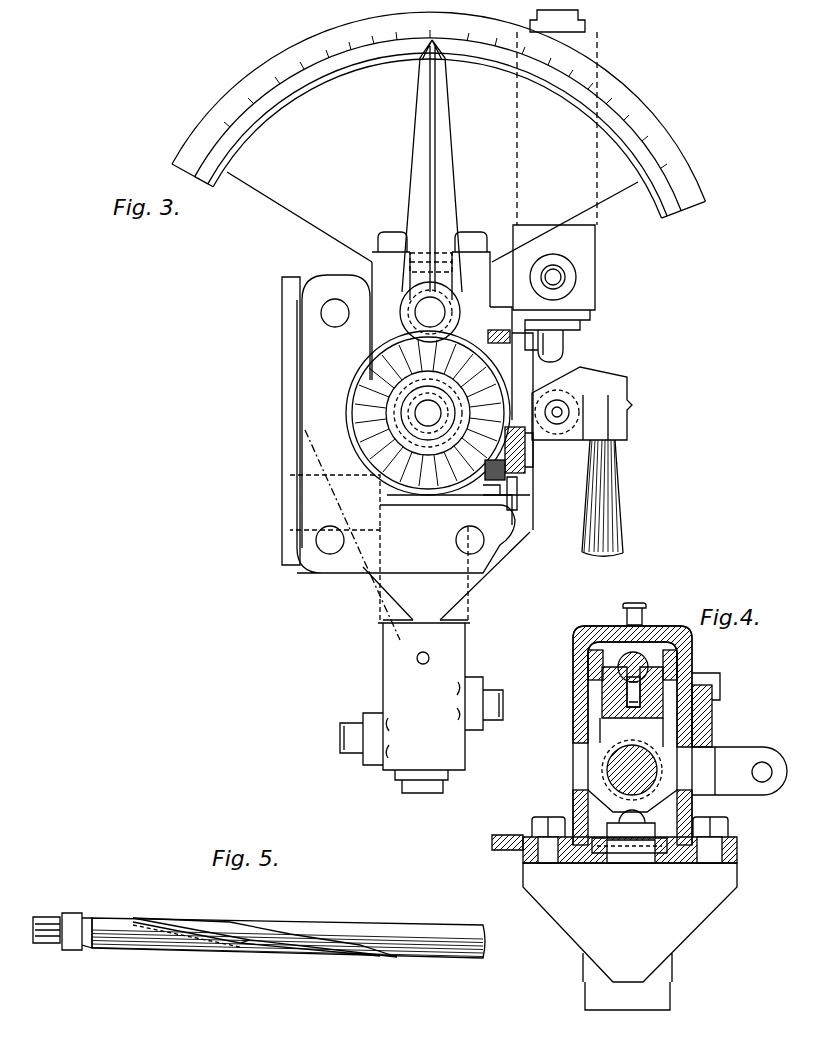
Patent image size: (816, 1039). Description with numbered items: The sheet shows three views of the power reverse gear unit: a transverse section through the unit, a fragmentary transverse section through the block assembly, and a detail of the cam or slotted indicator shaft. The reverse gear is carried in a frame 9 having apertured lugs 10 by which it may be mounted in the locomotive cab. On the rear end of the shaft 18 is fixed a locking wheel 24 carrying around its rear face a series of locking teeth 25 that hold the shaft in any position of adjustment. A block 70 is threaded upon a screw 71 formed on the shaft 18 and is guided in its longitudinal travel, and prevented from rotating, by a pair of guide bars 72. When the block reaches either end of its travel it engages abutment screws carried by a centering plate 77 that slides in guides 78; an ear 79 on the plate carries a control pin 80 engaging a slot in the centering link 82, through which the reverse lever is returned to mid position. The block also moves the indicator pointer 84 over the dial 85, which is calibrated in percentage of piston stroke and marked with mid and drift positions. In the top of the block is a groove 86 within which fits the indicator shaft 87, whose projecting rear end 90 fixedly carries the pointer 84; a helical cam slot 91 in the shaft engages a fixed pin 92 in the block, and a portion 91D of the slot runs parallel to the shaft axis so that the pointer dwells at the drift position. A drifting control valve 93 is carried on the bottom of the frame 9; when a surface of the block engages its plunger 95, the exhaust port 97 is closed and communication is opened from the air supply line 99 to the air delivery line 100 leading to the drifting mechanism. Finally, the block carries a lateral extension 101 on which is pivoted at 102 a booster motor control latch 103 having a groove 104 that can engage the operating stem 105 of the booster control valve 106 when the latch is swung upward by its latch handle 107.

In FIG. 3, the frame 9 is at (410, 436).
In FIG. 4, the frame 9 is at (577, 800).
In FIG. 3, the apertured lugs 10 is at (282, 317).
In FIG. 3, the shaft 18 is at (428, 413).
In FIG. 3, the locking wheel 24 is at (408, 413).
In FIG. 3, the locking teeth 25 is at (352, 426).
In FIG. 4, the block 70 is at (632, 761).
In FIG. 4, the screw 71 is at (625, 787).
In FIG. 4, the guide bars 72 is at (588, 660).
In FIG. 3, the centering plate 77 is at (499, 346).
In FIG. 4, the centering plate 77 is at (712, 717).
In FIG. 3, the guides 78 is at (543, 496).
In FIG. 4, the guides 78 is at (720, 690).
In FIG. 3, the ear 79 is at (512, 522).
In FIG. 3, the control pin 80 is at (527, 450).
In FIG. 3, the centering link 82 is at (507, 472).
In FIG. 3, the indicator pointer 84 is at (442, 134).
In FIG. 3, the dial 85 is at (266, 70).
In FIG. 4, the groove 86 is at (620, 687).
In FIG. 4, the indicator shaft 87 is at (636, 656).
In FIG. 5, the indicator shaft 87 is at (288, 938).
In FIG. 3, the projecting rear end 90 is at (430, 312).
In FIG. 5, the projecting rear end 90 is at (48, 920).
In FIG. 5, the helical cam slot 91 is at (177, 918).
In FIG. 5, the parallel portion of slot 91D is at (260, 930).
In FIG. 4, the fixed pin 92 is at (637, 708).
In FIG. 3, the drifting control valve 93 is at (446, 662).
In FIG. 4, the plunger 95 is at (641, 822).
In FIG. 3, the exhaust port 97 is at (430, 658).
In FIG. 3, the air supply line 99 is at (344, 736).
In FIG. 3, the air delivery line 100 is at (495, 692).
In FIG. 4, the lateral extension 101 is at (746, 781).
In FIG. 3, the pivot 102 is at (560, 410).
In FIG. 4, the pivot 102 is at (765, 780).
In FIG. 3, the booster motor control latch 103 is at (610, 437).
In FIG. 3, the groove 104 is at (599, 396).
In FIG. 3, the operating stem 105 is at (566, 343).
In FIG. 3, the booster control valve 106 is at (554, 277).
In FIG. 3, the latch handle 107 is at (620, 523).